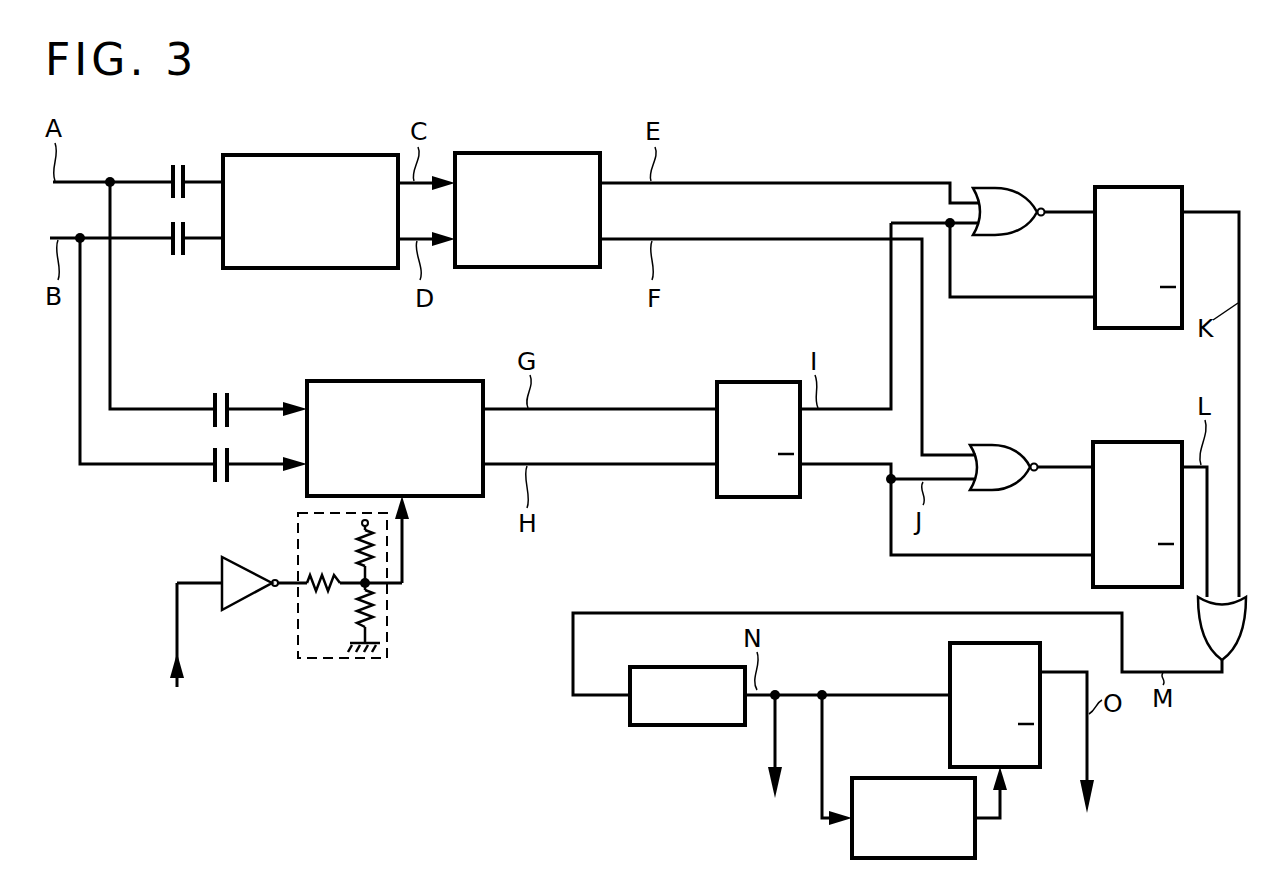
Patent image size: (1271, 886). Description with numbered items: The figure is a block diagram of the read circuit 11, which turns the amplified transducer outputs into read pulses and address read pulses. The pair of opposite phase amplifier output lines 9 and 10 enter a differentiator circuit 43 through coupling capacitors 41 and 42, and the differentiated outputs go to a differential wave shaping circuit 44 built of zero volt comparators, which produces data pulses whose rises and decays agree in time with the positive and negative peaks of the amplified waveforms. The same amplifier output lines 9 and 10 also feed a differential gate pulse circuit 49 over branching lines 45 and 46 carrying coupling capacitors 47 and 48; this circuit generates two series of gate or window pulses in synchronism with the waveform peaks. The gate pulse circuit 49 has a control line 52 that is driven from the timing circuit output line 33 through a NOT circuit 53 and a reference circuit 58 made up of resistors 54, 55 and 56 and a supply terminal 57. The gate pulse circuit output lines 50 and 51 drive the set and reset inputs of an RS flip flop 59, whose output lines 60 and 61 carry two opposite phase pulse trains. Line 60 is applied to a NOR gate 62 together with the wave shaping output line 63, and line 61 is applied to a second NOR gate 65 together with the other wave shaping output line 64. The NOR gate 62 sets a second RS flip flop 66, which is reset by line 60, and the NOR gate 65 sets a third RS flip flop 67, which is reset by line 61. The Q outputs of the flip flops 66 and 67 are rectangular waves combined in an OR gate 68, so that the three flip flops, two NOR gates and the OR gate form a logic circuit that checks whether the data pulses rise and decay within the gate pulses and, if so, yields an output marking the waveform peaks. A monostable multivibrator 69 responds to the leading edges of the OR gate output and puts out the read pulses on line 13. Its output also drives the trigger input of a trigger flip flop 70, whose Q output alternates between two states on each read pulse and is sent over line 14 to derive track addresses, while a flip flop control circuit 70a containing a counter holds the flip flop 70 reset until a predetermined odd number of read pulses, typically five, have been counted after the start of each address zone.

The output line 9 is at (98, 181).
The output line 10 is at (57, 237).
The read circuit 11 is at (1073, 122).
The line 13 is at (787, 735).
The line 14 is at (1089, 765).
The output line 33 is at (176, 619).
The coupling capacitor 41 is at (174, 165).
The coupling capacitor 42 is at (174, 257).
The differentiator circuit 43 is at (305, 155).
The differential wave shaping circuit 44 is at (530, 153).
The line 45 is at (148, 408).
The line 46 is at (137, 466).
The coupling capacitor 47 is at (229, 400).
The coupling capacitor 48 is at (229, 474).
The differential gate pulse circuit 49 is at (393, 381).
The output line 50 is at (626, 408).
The output line 51 is at (636, 466).
The control line 52 is at (404, 544).
The NOT circuit 53 is at (256, 594).
The resistor 54 is at (329, 592).
The resistor 55 is at (368, 567).
The resistor 56 is at (385, 622).
The supply terminal 57 is at (362, 542).
The reference circuit 58 is at (388, 595).
The RS flip flop 59 is at (753, 382).
The output line 60 is at (858, 408).
The output line 61 is at (840, 466).
The NOR gate 62 is at (997, 188).
The output line 63 is at (742, 181).
The output line 64 is at (748, 242).
The NOR gate 65 is at (990, 445).
The RS flip flop 66 is at (1137, 187).
The RS flip flop 67 is at (1118, 442).
The OR gate 68 is at (1197, 630).
The monostable multivibrator 69 is at (680, 667).
The trigger flip flop 70 is at (1040, 643).
The flip flop control circuit 70a is at (893, 778).